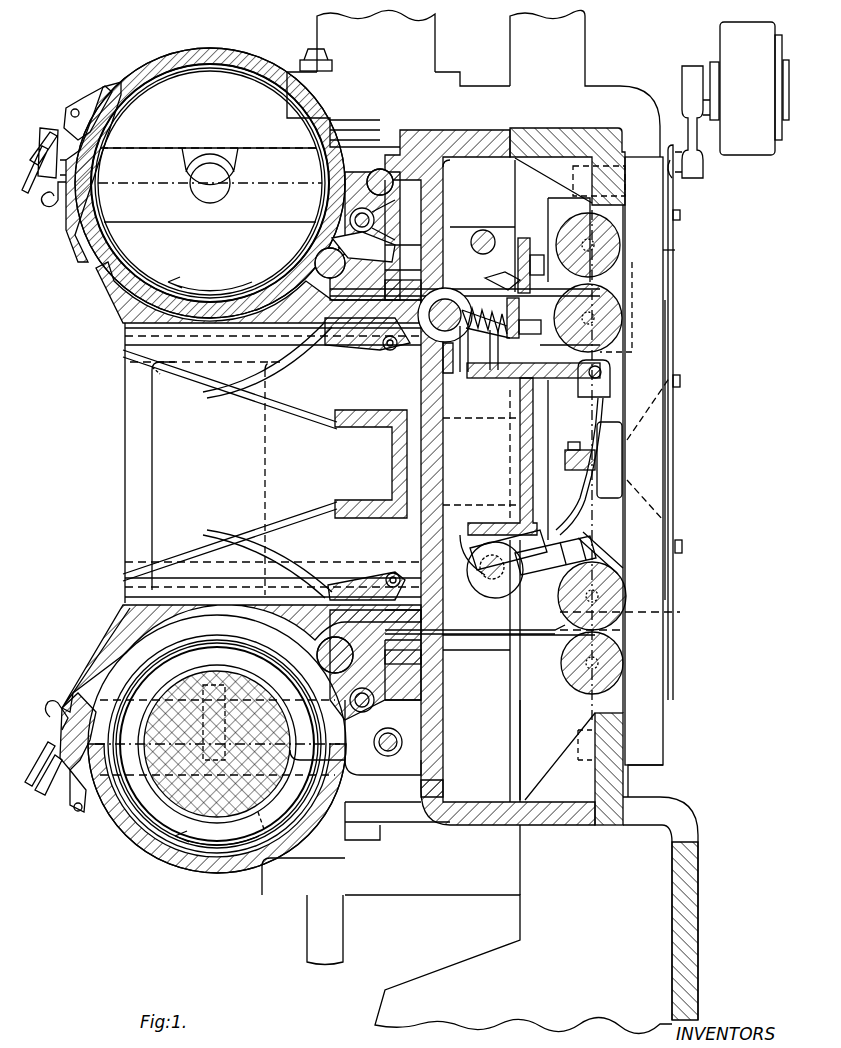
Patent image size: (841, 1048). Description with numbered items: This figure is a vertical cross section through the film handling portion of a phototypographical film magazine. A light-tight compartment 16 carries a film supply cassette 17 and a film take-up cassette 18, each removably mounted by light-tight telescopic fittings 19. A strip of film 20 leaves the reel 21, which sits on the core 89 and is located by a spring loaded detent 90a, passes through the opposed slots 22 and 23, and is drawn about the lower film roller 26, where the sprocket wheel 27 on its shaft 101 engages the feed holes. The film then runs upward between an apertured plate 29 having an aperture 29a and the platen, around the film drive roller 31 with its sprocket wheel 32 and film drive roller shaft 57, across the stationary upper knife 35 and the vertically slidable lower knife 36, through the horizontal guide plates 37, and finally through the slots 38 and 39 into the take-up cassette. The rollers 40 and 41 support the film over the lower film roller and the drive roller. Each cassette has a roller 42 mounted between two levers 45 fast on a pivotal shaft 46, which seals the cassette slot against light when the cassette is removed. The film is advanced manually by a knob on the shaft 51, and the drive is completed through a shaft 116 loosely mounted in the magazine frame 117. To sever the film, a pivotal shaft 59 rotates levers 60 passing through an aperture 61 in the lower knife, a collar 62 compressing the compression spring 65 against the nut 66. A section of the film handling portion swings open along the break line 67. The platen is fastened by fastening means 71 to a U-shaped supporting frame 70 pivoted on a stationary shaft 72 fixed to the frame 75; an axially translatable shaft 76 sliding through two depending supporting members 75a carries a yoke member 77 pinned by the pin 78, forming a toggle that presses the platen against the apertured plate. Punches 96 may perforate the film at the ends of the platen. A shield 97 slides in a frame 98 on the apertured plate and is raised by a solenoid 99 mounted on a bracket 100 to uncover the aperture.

The light-tight compartment 16 is at (465, 168).
The film supply cassette 17 is at (162, 858).
The film take-up cassette 18 is at (203, 50).
The light-tight telescopic fittings 19 is at (395, 262).
The strip of film 20 is at (138, 256).
The reel 21 is at (215, 670).
The slot 22 is at (340, 590).
The slot 23 is at (421, 652).
The lower film roller 26 is at (608, 596).
The sprocket wheel 27 is at (640, 630).
The apertured plate 29 is at (655, 320).
The aperture 29a is at (647, 497).
The film drive roller 31 is at (603, 300).
The sprocket wheel 32 is at (676, 262).
The upper knife 35 is at (524, 236).
The lower knife 36 is at (520, 385).
The horizontal guide plates 37 is at (500, 275).
The slot 38 is at (440, 294).
The slot 39 is at (270, 338).
The roller 40 is at (612, 672).
The roller 41 is at (602, 242).
The roller 42 is at (315, 268).
The levers 45 is at (345, 250).
The pivotal shaft 46 is at (350, 218).
The shaft 51 is at (484, 230).
The film drive roller shaft 57 is at (655, 297).
The pivotal shaft 59 is at (448, 330).
The levers 60 is at (535, 323).
The aperture 61 is at (500, 380).
The collar 62 is at (480, 311).
The compression spring 65 is at (492, 372).
The nut 66 is at (450, 298).
The break line 67 is at (522, 745).
The U-shaped supporting frame 70 is at (600, 402).
The fastening means 71 is at (568, 448).
The stationary shaft 72 is at (610, 372).
The frame 75 is at (535, 445).
The depending supporting members 75a is at (500, 610).
The axially translatable shaft 76 is at (482, 588).
The yoke member 77 is at (525, 585).
The pin 78 is at (490, 566).
The core 89 is at (165, 792).
The detent 90a is at (268, 830).
The punches 96 is at (623, 470).
The shield 97 is at (668, 460).
The frame 98 is at (674, 405).
The solenoid 99 is at (758, 152).
The bracket 100 is at (702, 168).
The shaft 101 is at (720, 606).
The shaft 116 is at (333, 935).
The magazine frame 117 is at (358, 76).